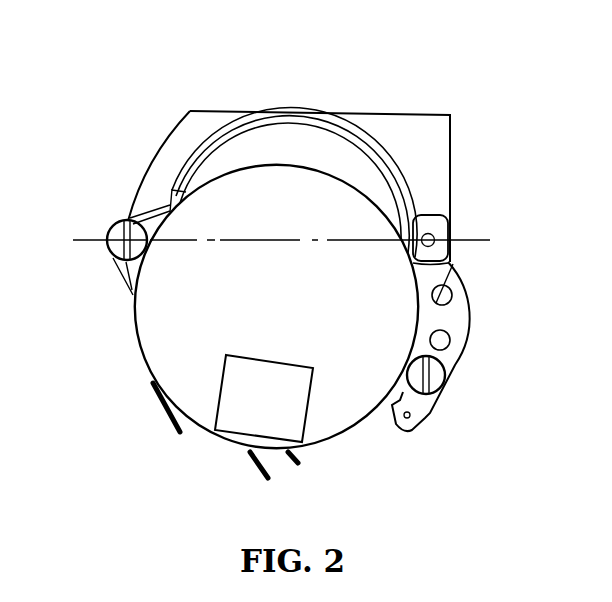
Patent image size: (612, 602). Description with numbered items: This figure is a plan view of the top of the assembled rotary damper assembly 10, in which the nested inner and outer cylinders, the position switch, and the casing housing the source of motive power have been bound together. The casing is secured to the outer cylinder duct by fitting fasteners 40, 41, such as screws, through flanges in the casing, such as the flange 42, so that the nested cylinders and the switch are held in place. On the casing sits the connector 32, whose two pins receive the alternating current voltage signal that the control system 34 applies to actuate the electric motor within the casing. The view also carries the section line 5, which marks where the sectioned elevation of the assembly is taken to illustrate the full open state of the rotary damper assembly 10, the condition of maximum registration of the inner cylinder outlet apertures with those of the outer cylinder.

The rotary damper assembly 10 is at (395, 97).
The section line 5- 5 is at (490, 194).
The connector 32 is at (133, 312).
The control system 34 is at (238, 417).
The fastener 40 is at (115, 225).
The fastener 41 is at (438, 380).
The flange 42 is at (466, 318).